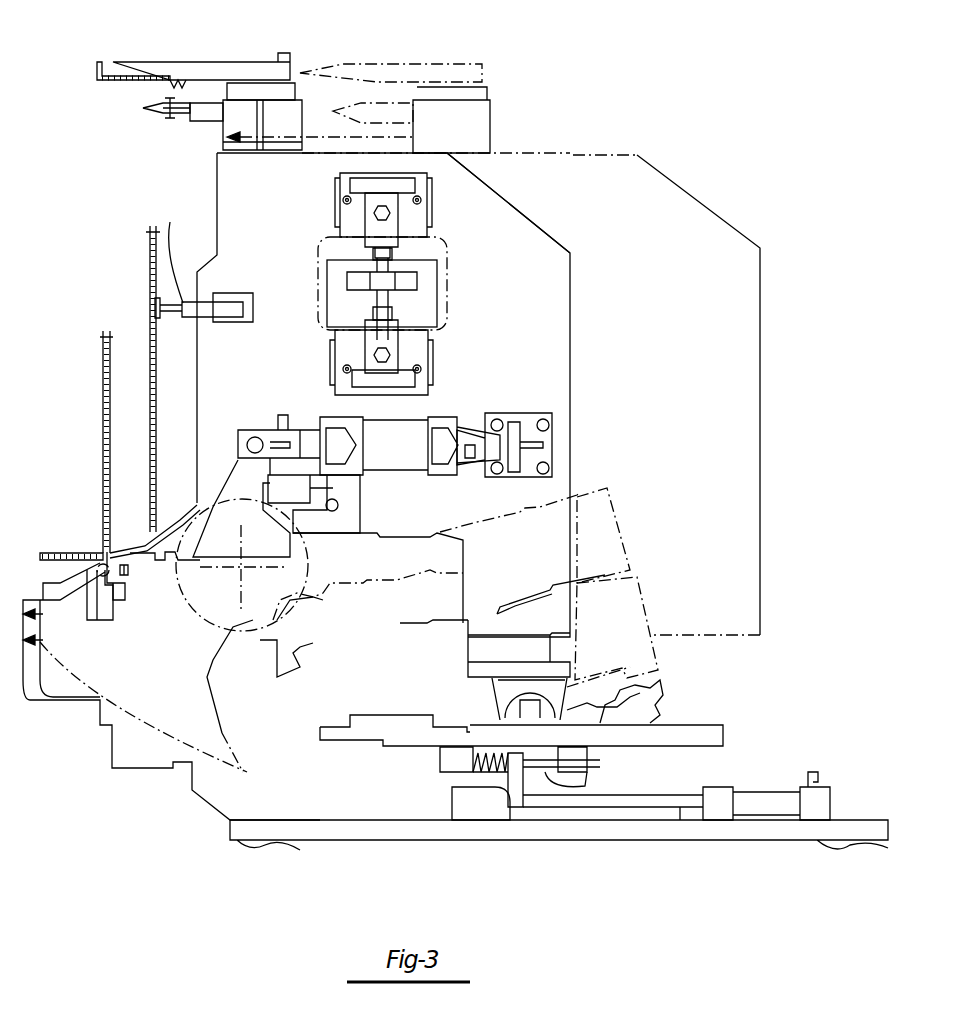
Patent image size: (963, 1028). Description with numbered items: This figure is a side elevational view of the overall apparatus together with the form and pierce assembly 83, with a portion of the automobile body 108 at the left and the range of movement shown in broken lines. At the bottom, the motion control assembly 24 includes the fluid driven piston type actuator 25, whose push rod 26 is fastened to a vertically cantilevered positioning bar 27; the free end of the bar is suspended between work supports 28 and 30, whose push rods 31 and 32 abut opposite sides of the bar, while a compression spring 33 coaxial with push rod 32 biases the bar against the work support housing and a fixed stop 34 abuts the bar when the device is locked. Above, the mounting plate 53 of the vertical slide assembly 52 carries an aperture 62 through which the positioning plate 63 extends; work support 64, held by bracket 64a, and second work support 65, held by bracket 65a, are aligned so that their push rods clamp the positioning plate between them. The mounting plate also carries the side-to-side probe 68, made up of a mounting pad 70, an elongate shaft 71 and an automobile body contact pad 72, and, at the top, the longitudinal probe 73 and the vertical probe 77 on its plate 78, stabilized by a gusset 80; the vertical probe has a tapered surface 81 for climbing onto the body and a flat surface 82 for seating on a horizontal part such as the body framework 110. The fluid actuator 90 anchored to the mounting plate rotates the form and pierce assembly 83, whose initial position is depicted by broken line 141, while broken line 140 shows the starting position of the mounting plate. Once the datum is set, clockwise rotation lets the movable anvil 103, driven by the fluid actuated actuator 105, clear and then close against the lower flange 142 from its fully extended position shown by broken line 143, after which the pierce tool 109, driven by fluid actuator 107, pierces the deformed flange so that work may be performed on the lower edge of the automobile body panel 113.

The motion control assembly 24 is at (818, 760).
The fluid driven piston type actuator 25 is at (833, 803).
The actuator push rod 26 is at (678, 810).
The positioning bar 27 is at (517, 807).
The work support 28 is at (588, 758).
The work support 30 is at (440, 757).
The fluid actuated push rod 31 is at (585, 780).
The fluid actuated push rod 32 is at (480, 772).
The compression spring 33 is at (483, 757).
The fixed stop 34 is at (450, 803).
The vertical slide assembly 52 is at (537, 222).
The mounting plate 53 is at (238, 222).
The aperture 62 is at (447, 278).
The positioning plate 63 is at (345, 280).
The work support 64 is at (400, 222).
The bracket 64a is at (428, 190).
The second work support 65 is at (400, 348).
The bracket 65a is at (432, 377).
The probe 68 is at (170, 222).
The mounting pad 70 is at (250, 322).
The elongate shaft 71 is at (207, 320).
The automobile body contact pad 72 is at (160, 313).
The longitudinal probe 73 is at (200, 120).
The vertical probe 77 is at (253, 60).
The plate 78 is at (303, 90).
The gusset 80 is at (267, 113).
The tapered surface 81 is at (115, 72).
The flat surface 82 is at (187, 80).
The form and pierce assembly 83 is at (110, 757).
The fluid actuator 90 is at (472, 420).
The movable anvil 103 is at (87, 597).
The fluid actuated actuator 105 is at (583, 641).
The fluid actuator 107 is at (575, 556).
The automobile body 108 is at (150, 252).
The pierce tool 109 is at (130, 570).
The automobile body framework 110 is at (137, 83).
The automobile body panel 113 is at (163, 110).
The broken line 140 is at (763, 400).
The broken line 141 is at (613, 510).
The lower flange 142 is at (110, 583).
The broken line 143 is at (13, 700).